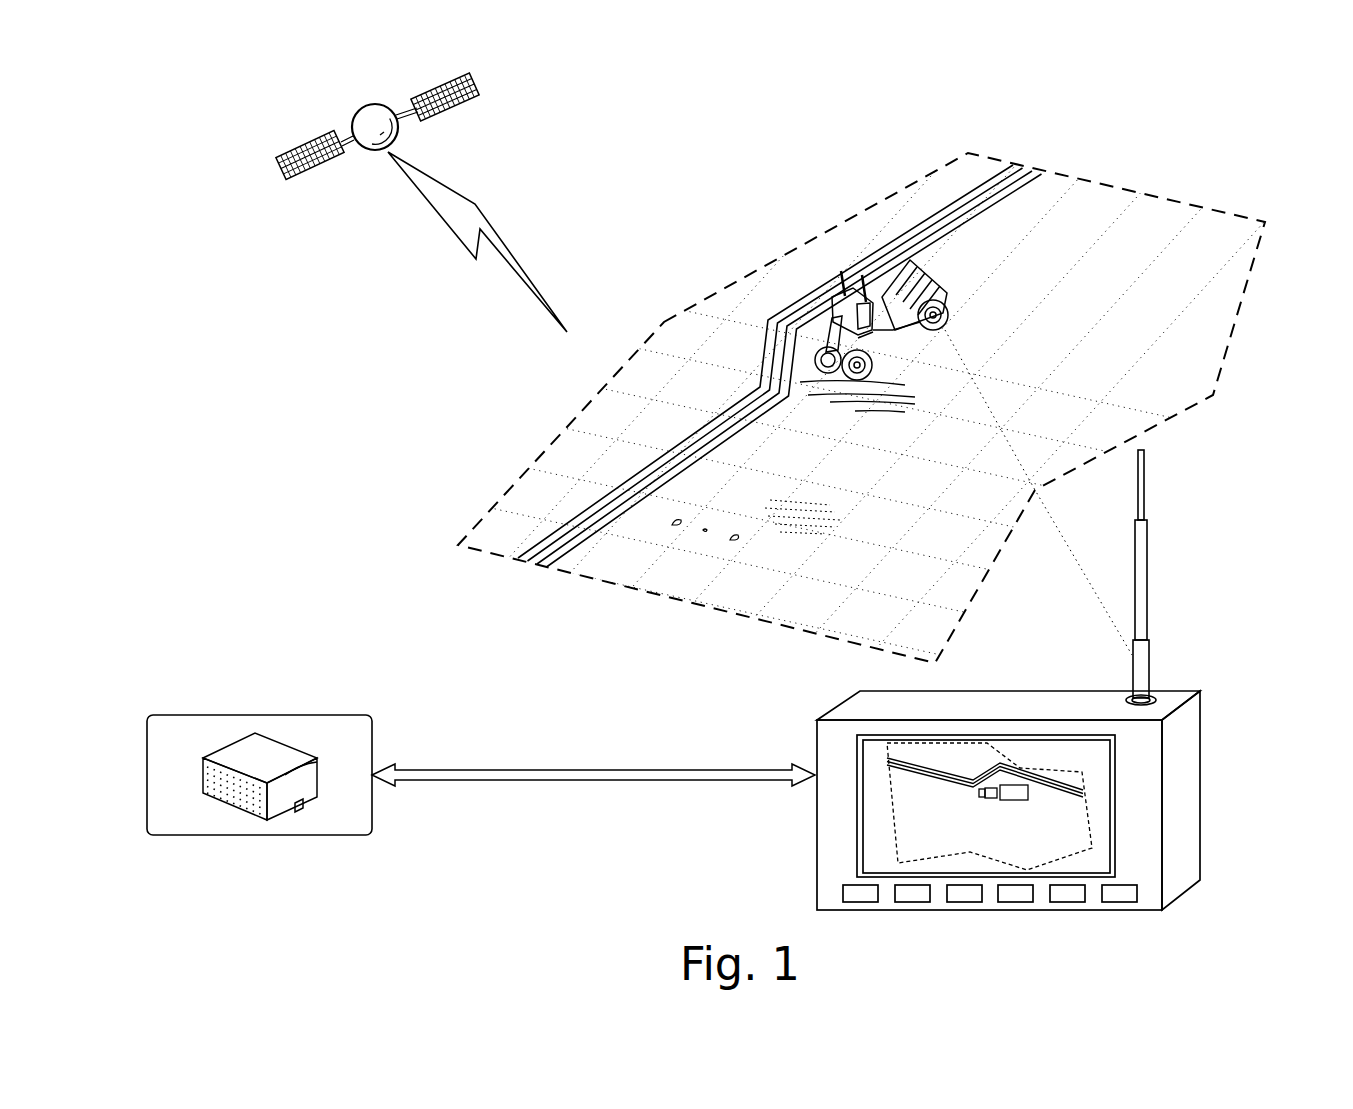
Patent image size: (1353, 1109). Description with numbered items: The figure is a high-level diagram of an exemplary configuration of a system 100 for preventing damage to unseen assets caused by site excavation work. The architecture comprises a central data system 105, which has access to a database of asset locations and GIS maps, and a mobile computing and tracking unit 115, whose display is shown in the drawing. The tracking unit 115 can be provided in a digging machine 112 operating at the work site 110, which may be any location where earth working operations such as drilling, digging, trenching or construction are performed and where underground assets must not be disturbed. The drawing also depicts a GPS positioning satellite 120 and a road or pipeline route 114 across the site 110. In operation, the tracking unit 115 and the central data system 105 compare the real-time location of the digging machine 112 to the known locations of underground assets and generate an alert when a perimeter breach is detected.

The system 100 is at (160, 138).
The central data system 105 is at (382, 822).
The work site 110 is at (1092, 176).
The digging machine 112 is at (830, 325).
The road / buried pipeline 114 is at (560, 527).
The mobile computing and tracking unit 115 is at (1202, 767).
The GPS positioning satellite 120 is at (368, 153).